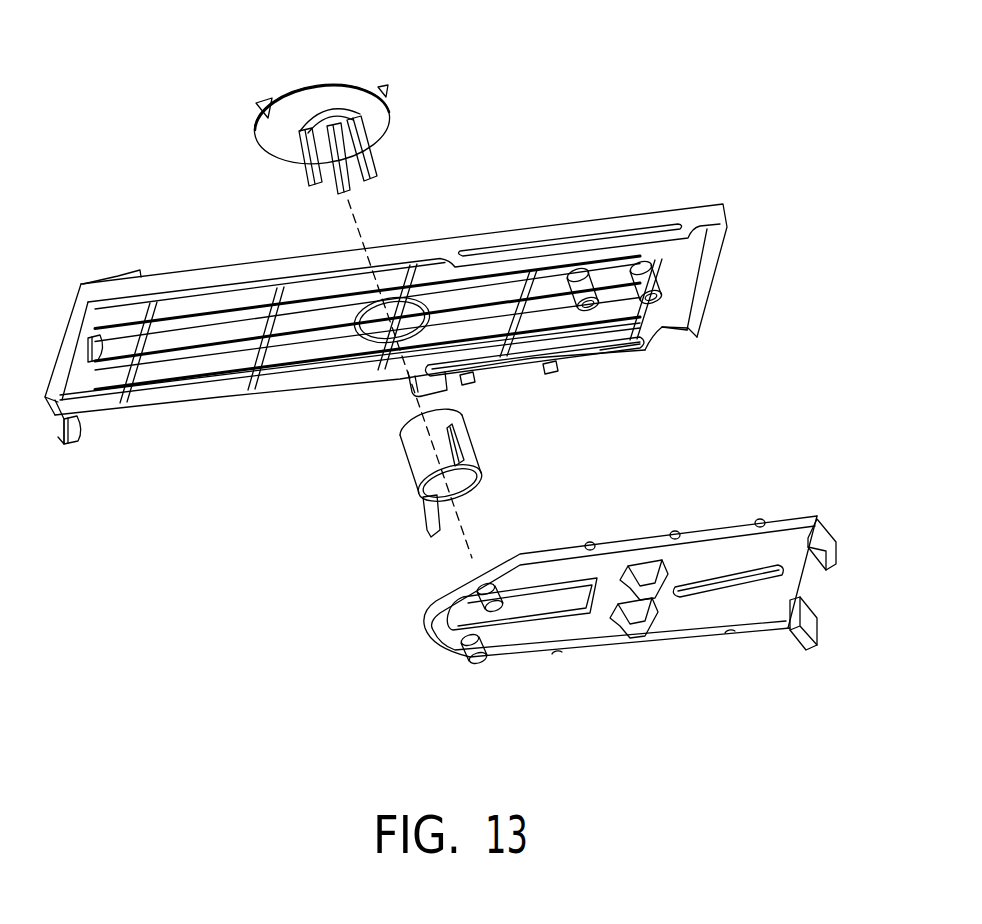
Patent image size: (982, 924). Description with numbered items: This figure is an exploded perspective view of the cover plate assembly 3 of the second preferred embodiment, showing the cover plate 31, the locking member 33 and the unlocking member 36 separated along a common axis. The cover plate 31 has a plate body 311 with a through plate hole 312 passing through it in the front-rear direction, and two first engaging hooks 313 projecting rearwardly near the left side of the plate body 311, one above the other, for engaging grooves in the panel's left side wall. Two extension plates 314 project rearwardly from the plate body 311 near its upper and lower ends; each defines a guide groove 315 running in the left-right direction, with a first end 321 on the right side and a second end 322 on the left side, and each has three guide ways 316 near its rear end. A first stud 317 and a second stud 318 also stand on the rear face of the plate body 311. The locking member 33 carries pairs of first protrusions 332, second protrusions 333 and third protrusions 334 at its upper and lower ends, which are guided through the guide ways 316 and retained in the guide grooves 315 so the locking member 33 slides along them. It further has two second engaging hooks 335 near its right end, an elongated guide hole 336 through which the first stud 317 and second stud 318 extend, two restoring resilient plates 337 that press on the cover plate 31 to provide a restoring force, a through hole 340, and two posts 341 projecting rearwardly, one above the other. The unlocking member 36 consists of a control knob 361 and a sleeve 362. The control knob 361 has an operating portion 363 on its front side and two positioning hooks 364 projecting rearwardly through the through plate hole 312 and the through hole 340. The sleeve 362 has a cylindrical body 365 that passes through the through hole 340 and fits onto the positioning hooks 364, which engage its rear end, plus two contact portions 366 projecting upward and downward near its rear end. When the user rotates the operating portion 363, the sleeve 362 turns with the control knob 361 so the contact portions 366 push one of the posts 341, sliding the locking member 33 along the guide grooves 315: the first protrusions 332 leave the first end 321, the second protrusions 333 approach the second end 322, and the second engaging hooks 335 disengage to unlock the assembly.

The cover plate assembly 3 is at (720, 190).
The cover plate 31 is at (105, 262).
The plate body 311 is at (188, 333).
The through plate hole 312 is at (375, 312).
The first engaging hooks 313 is at (88, 356).
The extension plates 314 is at (605, 253).
The guide groove 315 is at (622, 342).
The guide ways 316 is at (549, 371).
The first stud 317 is at (587, 297).
The second stud 318 is at (649, 298).
The first end 321 is at (690, 328).
The second end 322 is at (410, 373).
The locking member 33 is at (813, 505).
The first protrusions 332 is at (760, 521).
The second protrusions 333 is at (590, 543).
The third protrusions 334 is at (675, 532).
The second engaging hooks 335 is at (838, 562).
The elongated guide hole 336 is at (718, 573).
The restoring resilient plates 337 is at (655, 605).
The through hole 340 is at (522, 607).
The posts 341 is at (483, 590).
The unlocking member 36 is at (505, 450).
The control knob 361 is at (232, 118).
The sleeve 362 is at (400, 503).
The operating portion 363 is at (282, 102).
The positioning hooks 364 is at (308, 180).
The cylindrical body 365 is at (416, 463).
The contact portions 366 is at (455, 455).